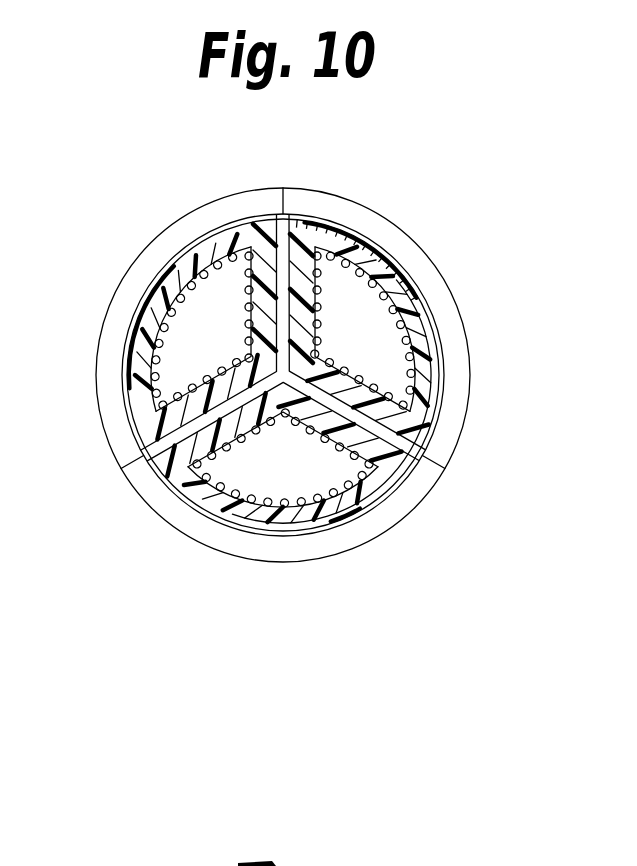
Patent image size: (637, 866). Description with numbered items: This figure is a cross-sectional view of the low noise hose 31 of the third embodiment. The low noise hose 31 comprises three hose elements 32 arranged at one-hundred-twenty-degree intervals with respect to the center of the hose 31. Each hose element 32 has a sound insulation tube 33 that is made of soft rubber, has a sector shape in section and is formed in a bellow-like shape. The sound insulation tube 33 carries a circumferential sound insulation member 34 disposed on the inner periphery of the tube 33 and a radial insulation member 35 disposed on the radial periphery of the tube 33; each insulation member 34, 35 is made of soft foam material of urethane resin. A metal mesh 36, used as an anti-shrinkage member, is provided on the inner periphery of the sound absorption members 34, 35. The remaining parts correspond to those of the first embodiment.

The low noise hose 31 is at (161, 217).
The hose element 32 is at (387, 240).
The sound insulation tube 33 is at (205, 238).
The circumferential sound insulation member 34 is at (137, 346).
The radial insulation member 35 is at (233, 365).
The metal mesh 36 is at (163, 374).